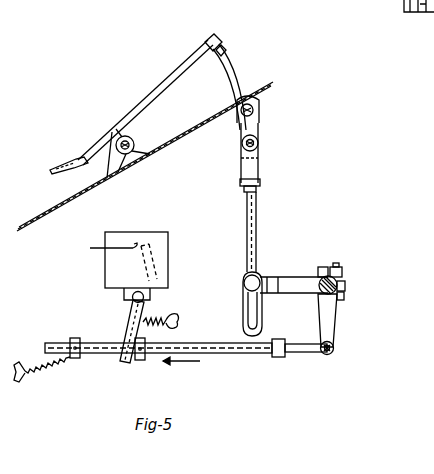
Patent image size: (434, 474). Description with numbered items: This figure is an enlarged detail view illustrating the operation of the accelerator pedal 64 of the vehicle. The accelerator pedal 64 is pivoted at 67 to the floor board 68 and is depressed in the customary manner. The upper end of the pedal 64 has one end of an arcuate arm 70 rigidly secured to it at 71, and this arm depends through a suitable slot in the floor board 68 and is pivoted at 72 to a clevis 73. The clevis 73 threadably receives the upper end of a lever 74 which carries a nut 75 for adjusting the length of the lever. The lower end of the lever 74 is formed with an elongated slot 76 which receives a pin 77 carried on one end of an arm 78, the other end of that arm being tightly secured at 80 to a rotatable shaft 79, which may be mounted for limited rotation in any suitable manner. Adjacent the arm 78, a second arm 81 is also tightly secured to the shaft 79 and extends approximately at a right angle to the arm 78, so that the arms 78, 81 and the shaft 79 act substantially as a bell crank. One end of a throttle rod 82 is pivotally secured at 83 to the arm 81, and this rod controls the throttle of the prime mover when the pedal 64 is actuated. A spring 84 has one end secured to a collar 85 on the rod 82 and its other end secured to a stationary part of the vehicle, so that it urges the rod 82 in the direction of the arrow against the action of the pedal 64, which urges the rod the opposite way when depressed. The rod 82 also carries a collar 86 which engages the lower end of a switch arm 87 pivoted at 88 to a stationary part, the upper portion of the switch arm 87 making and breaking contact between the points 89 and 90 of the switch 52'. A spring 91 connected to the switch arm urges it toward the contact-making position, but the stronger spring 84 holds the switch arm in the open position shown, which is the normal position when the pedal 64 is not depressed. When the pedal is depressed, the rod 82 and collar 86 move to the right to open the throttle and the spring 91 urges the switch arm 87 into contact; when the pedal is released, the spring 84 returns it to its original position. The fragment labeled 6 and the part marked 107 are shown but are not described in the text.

The machine frame 6 is at (343, 10).
The switch 52' is at (155, 255).
The accelerator pedal 64 is at (165, 82).
The pivot 67 is at (133, 140).
The floor board 68 is at (182, 137).
The arcuate arm 70 is at (233, 75).
The securing point 71 is at (213, 36).
The pivot 72 is at (260, 144).
The clevis 73 is at (256, 176).
The lever 74 is at (256, 222).
The nut 75 is at (241, 184).
The elongated slot 76 is at (249, 320).
The pin 77 is at (246, 284).
The arm 78 is at (290, 284).
The rotatable shaft 79 is at (338, 266).
The securing point 80 is at (346, 285).
The arm 81 is at (332, 324).
The throttle rod 82 is at (203, 356).
The pivot 83 is at (333, 352).
The spring 84 is at (40, 371).
The collar 85 is at (80, 357).
The collar 86 is at (139, 361).
The switch arm 87 is at (134, 330).
The pivot 88 is at (145, 299).
The contact point 89 is at (152, 277).
The contact point 90 is at (146, 240).
The spring 91 is at (163, 323).
The pivot pulley 107 is at (258, 108).